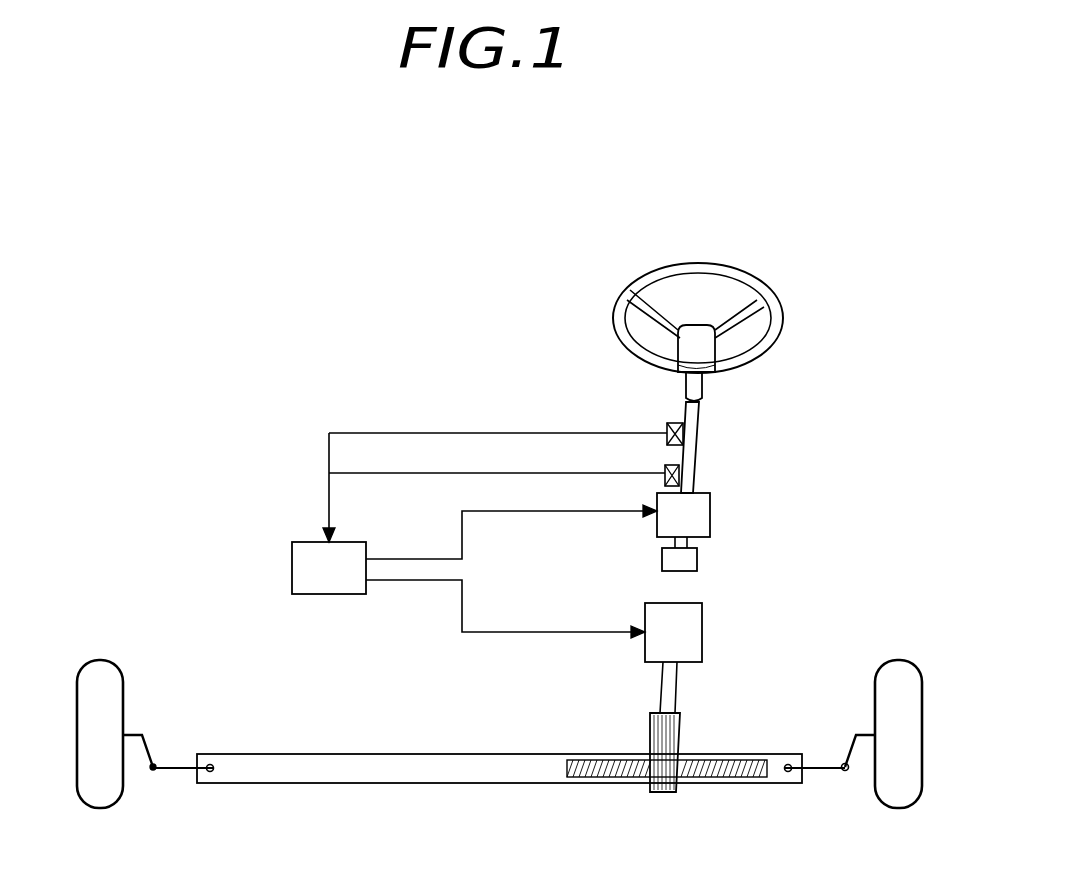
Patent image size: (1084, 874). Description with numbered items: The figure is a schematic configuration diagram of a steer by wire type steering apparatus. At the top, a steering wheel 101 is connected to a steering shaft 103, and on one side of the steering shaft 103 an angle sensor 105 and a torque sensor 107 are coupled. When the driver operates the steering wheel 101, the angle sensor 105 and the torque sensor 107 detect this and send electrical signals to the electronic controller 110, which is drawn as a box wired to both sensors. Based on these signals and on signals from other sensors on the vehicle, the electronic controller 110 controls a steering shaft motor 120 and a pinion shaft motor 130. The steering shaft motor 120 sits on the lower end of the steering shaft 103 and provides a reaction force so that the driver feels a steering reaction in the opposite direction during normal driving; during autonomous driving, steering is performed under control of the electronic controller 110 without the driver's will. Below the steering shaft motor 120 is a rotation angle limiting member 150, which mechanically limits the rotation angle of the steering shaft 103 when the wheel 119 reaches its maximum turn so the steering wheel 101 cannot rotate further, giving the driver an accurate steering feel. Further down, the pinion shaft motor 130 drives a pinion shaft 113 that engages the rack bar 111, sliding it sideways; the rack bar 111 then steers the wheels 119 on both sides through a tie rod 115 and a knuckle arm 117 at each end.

The steering wheel 101 is at (778, 322).
The steering shaft 103 is at (696, 448).
The angle sensor 105 is at (667, 430).
The torque sensor 107 is at (665, 470).
The electronic controller 110 is at (292, 568).
The rack bar 111 is at (413, 773).
The pinion shaft 113 is at (672, 728).
The tie rod 115 is at (170, 773).
The knuckle arm 117 is at (150, 750).
The wheel 119 is at (120, 690).
The steering shaft motor 120 is at (706, 518).
The pinion shaft motor 130 is at (698, 620).
The rotation angle limiting member 150 is at (698, 560).